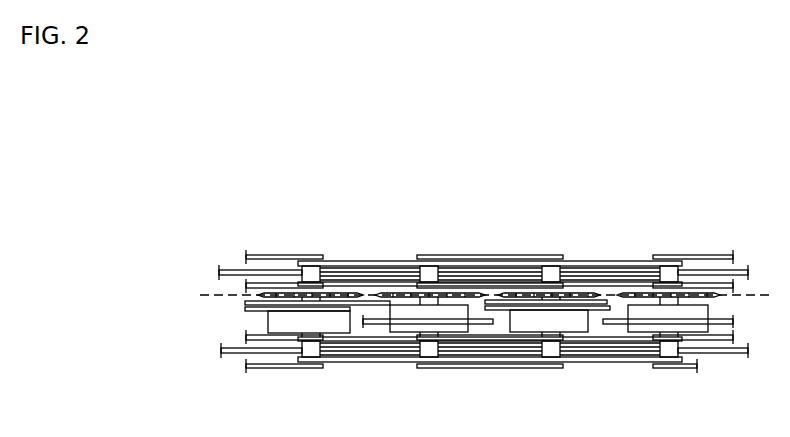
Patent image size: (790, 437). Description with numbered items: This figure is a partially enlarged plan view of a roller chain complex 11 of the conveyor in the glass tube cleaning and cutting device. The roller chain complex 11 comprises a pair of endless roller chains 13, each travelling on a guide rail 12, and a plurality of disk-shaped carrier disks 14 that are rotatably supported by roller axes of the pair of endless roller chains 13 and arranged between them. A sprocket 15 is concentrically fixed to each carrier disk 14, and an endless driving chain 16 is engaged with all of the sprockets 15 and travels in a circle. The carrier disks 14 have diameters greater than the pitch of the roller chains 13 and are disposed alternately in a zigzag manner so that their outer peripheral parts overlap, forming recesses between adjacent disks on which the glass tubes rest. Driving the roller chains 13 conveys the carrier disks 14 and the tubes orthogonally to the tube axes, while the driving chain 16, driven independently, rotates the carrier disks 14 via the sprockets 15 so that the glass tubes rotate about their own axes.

The roller chain complex 11 is at (252, 237).
The guide rail 12 is at (467, 303).
The endless roller chain 13 is at (510, 258).
The carrier disk 14 is at (345, 290).
The sprocket 15 is at (395, 293).
The endless driving chain 16 is at (224, 299).